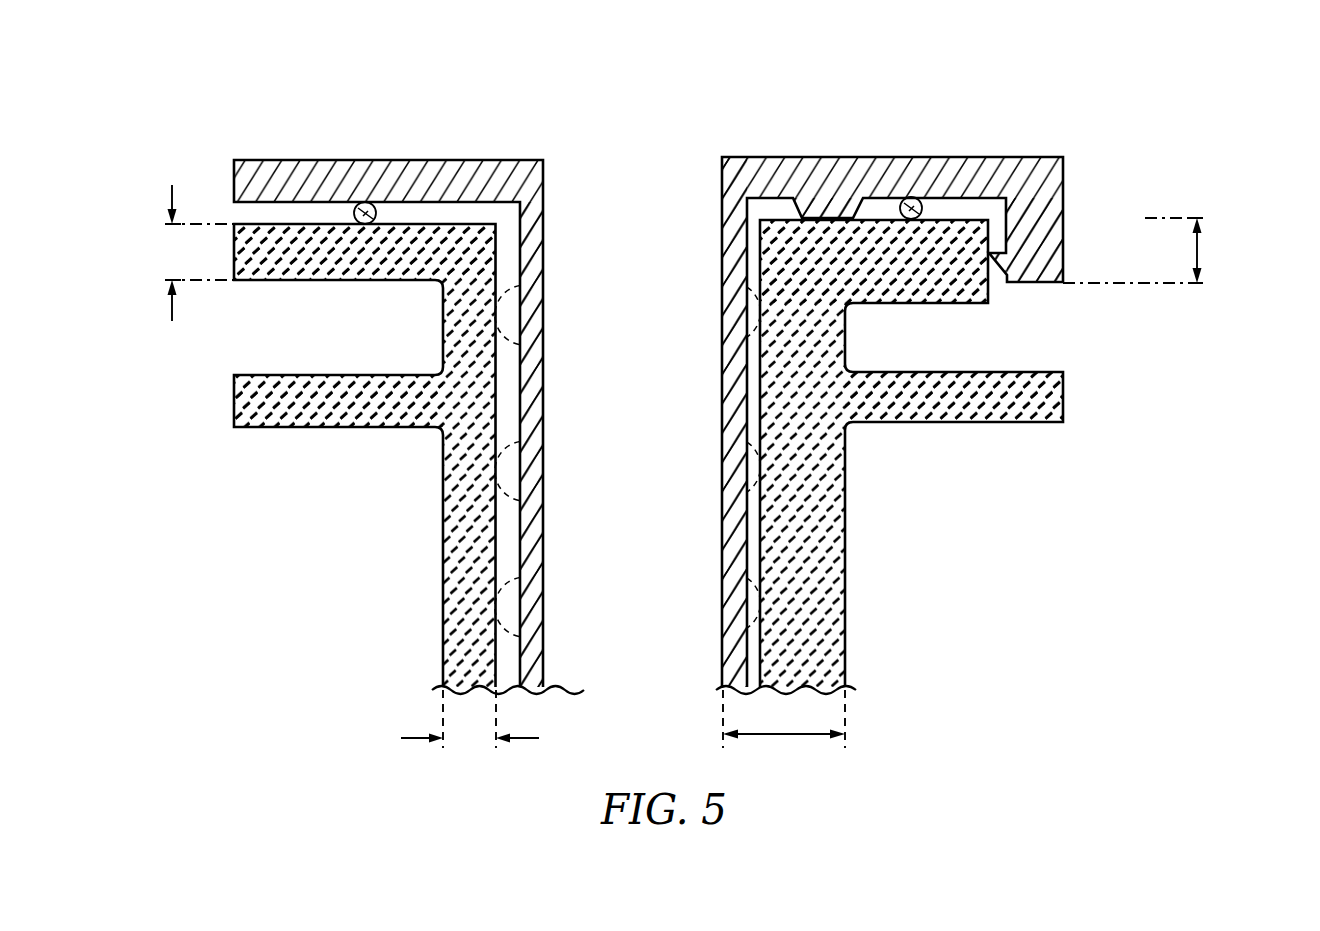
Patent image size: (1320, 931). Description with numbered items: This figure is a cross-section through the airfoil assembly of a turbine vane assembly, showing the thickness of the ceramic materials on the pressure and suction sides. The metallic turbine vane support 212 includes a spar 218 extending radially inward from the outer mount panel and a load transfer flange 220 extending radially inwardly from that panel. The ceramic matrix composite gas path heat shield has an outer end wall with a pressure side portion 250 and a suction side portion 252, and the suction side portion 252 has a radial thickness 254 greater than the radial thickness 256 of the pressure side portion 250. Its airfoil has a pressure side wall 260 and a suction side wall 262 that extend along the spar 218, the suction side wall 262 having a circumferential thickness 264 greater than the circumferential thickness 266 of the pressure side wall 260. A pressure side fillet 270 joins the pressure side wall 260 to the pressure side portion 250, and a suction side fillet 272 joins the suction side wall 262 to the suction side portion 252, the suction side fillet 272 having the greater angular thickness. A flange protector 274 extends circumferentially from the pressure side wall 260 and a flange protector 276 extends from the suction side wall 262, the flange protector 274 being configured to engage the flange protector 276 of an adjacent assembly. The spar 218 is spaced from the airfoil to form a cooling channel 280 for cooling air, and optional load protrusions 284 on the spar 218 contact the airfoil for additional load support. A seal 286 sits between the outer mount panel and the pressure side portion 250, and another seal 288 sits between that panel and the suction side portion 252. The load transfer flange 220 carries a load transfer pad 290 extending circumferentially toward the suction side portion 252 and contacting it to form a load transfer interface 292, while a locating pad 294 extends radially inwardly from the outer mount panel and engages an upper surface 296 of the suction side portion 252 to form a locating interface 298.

The turbine vane support 212 is at (887, 362).
The spar 218 is at (729, 440).
The load transfer flange 220 is at (1043, 284).
The pressure side portion 250 is at (290, 282).
The suction side portion 252 is at (927, 300).
The radial thickness 254 is at (1200, 250).
The radial thickness 256 is at (172, 188).
The pressure side wall 260 is at (365, 455).
The suction side wall 262 is at (911, 376).
The circumferential thickness 264 is at (785, 736).
The circumferential thickness 266 is at (413, 739).
The pressure side fillet 270 is at (428, 283).
The suction side fillet 272 is at (852, 306).
The flange protector 274 is at (318, 428).
The flange protector 276 is at (980, 410).
The cooling channel 280 is at (427, 423).
The load protrusions 284 is at (513, 322).
The seal 286 is at (376, 205).
The seal 288 is at (915, 203).
The load transfer pad 290 is at (1003, 251).
The load transfer interface 292 is at (977, 258).
The locating pad 294 is at (833, 207).
The upper surface 296 is at (790, 216).
The locating interface 298 is at (838, 232).